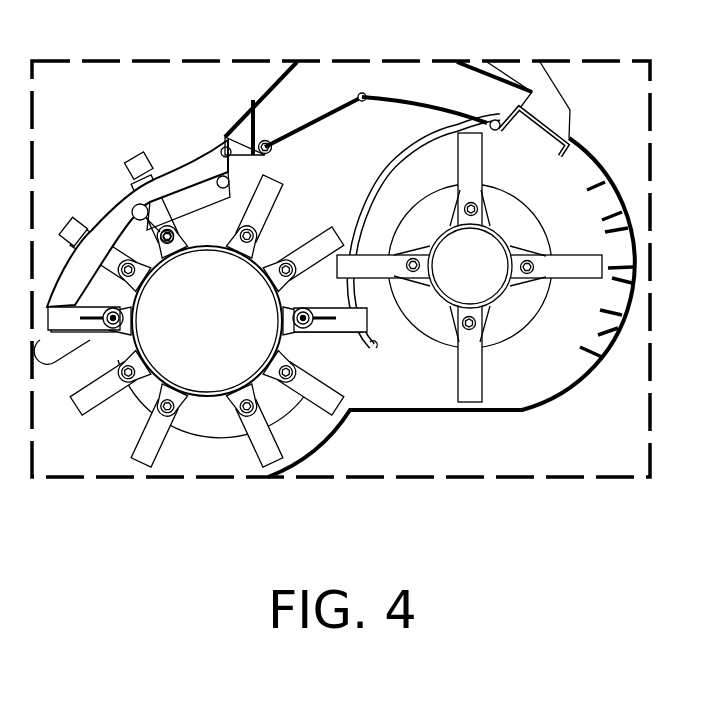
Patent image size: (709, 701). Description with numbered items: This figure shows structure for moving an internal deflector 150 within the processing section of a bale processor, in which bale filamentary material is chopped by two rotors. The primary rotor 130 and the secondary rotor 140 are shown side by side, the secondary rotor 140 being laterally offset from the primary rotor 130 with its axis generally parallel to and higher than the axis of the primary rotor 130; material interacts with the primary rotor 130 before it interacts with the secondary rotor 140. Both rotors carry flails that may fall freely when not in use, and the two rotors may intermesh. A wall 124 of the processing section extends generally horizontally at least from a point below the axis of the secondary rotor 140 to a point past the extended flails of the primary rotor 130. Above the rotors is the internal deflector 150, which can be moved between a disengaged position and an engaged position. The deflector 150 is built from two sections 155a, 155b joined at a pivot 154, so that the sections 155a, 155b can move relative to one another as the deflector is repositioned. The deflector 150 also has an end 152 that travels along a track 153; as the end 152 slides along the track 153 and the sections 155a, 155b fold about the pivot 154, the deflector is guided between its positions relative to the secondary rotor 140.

The wall 124 is at (365, 415).
The primary rotor 130 is at (203, 432).
The secondary rotor 140 is at (430, 338).
The internal deflector 150 is at (372, 83).
The end 152 is at (501, 117).
The track 153 is at (400, 165).
The pivot 154 is at (363, 93).
The section 155a is at (272, 92).
The section 155b is at (447, 106).